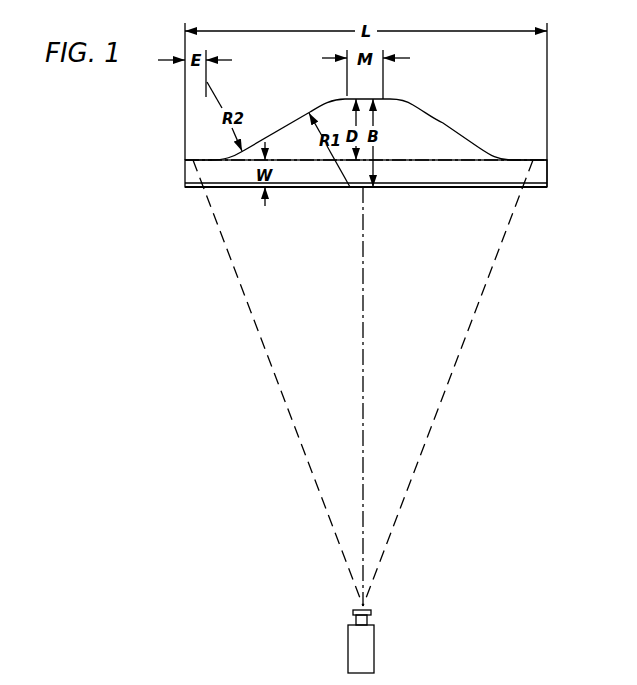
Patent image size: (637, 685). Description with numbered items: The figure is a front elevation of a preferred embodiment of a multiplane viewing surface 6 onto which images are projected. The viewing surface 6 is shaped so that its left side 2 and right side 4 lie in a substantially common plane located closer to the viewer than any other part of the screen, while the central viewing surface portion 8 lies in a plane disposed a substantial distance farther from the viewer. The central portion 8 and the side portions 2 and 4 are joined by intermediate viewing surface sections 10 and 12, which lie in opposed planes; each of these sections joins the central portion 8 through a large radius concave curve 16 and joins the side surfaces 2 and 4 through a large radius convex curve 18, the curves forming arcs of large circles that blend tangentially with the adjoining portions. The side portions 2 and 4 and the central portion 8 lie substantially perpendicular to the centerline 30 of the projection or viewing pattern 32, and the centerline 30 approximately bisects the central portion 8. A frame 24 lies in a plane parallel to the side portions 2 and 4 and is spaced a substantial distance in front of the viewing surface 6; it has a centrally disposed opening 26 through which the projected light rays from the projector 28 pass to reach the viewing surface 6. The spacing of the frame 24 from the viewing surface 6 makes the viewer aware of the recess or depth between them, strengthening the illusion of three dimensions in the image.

The left side of viewing surface 2 is at (203, 158).
The right side of viewing surface 4 is at (528, 160).
The viewing surface 6 is at (392, 98).
The central viewing surface portion 8 is at (366, 98).
The intermediate viewing surface section 10 is at (284, 124).
The intermediate viewing surface section 12 is at (443, 122).
The large radius concave curve 16 is at (323, 106).
The large radius convex curve 18 is at (250, 160).
The frame 24 is at (198, 189).
The centrally disposed opening 26 is at (247, 189).
The projector 28 is at (375, 648).
The centerline 30 is at (365, 280).
The projection or viewing pattern 32 is at (471, 331).